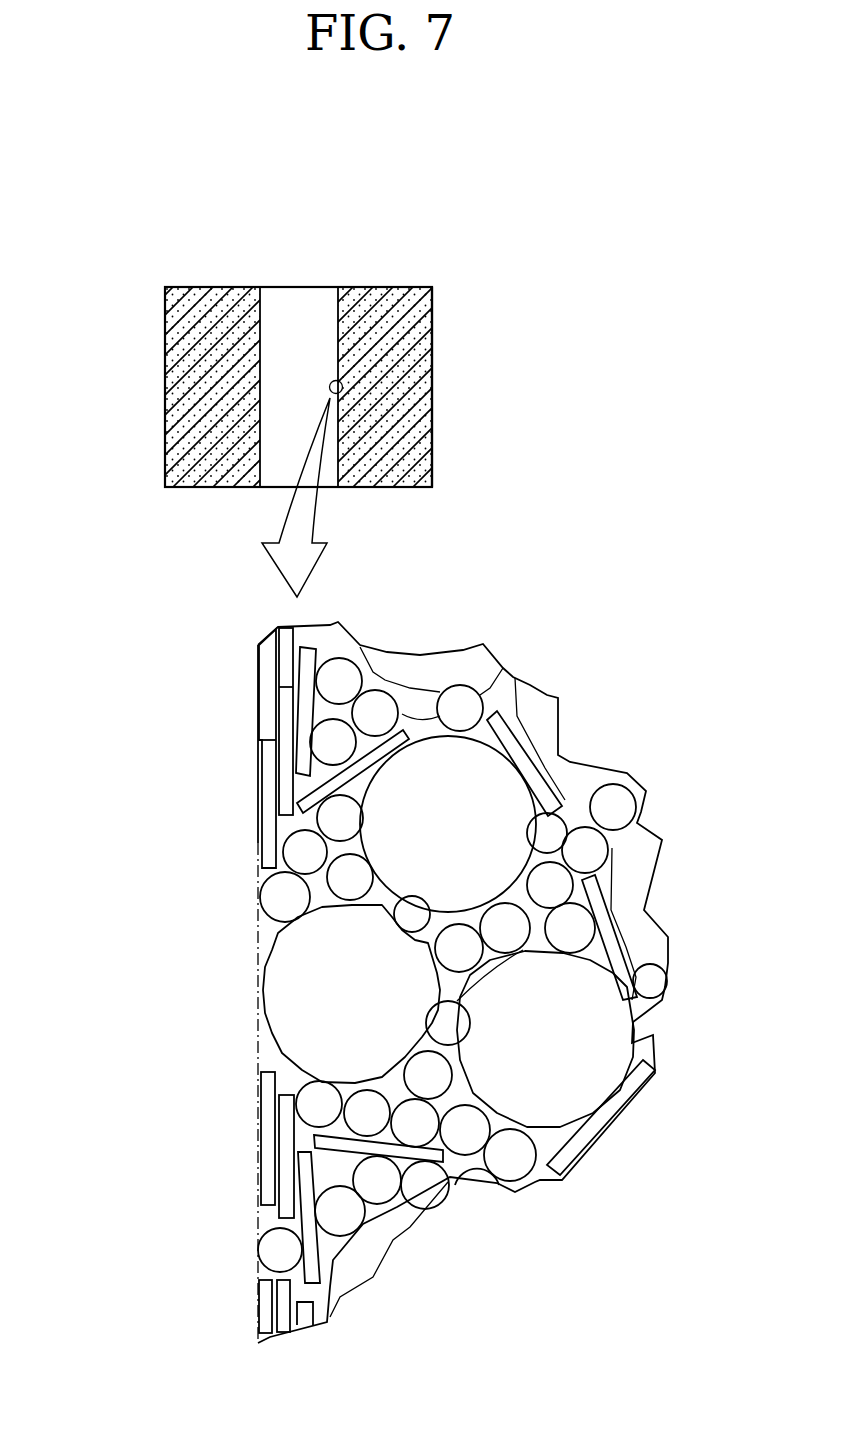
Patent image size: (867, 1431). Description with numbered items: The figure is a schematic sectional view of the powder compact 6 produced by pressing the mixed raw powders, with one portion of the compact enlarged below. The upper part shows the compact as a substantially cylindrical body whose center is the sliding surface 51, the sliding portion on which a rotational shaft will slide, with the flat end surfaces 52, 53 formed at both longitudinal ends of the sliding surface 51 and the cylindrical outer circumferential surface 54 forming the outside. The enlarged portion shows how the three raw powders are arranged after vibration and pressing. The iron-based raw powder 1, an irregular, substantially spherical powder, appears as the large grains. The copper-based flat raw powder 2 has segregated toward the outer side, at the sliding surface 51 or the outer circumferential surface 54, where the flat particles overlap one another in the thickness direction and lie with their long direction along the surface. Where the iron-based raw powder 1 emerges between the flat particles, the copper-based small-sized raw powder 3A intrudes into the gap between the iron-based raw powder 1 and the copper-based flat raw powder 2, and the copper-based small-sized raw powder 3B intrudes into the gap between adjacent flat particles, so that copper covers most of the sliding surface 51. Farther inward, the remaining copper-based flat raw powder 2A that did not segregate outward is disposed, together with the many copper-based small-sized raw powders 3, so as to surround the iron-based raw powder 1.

The powder compact 6 is at (153, 276).
The sliding surface 51 is at (320, 312).
The flat end surface 52 is at (385, 287).
The flat end surface 53 is at (393, 488).
The outer circumferential surface 54 is at (433, 437).
The iron-based raw powder 1 is at (310, 952).
The copper-based flat raw powder 2 is at (303, 1178).
The remaining copper-based flat raw powder 2A is at (410, 731).
The copper-based small-sized raw powder 3 is at (307, 852).
The copper-based small-sized raw powder 3A is at (313, 1097).
The copper-based small-sized raw powder 3B is at (270, 1282).